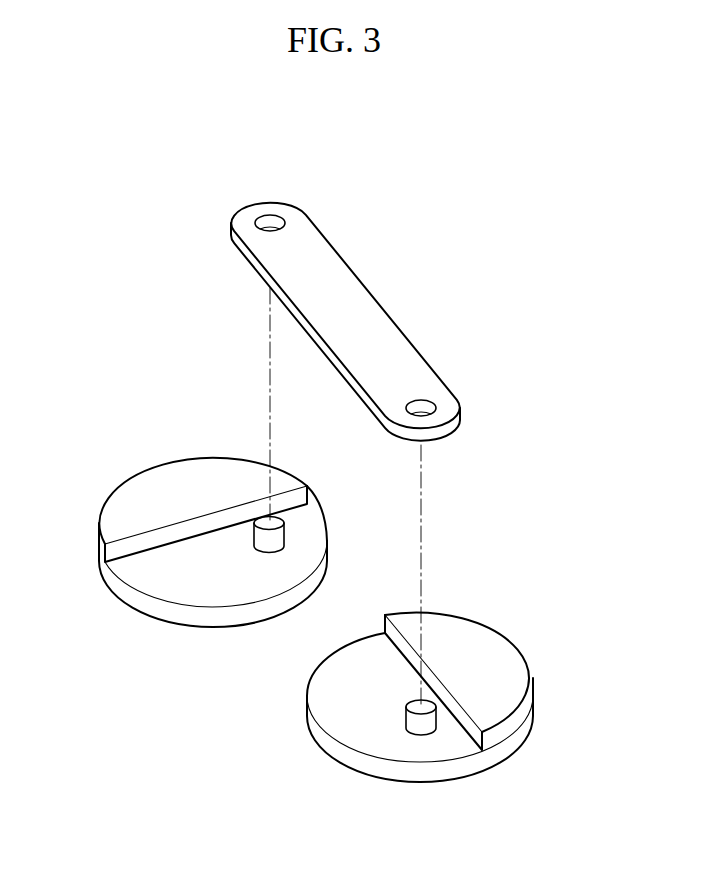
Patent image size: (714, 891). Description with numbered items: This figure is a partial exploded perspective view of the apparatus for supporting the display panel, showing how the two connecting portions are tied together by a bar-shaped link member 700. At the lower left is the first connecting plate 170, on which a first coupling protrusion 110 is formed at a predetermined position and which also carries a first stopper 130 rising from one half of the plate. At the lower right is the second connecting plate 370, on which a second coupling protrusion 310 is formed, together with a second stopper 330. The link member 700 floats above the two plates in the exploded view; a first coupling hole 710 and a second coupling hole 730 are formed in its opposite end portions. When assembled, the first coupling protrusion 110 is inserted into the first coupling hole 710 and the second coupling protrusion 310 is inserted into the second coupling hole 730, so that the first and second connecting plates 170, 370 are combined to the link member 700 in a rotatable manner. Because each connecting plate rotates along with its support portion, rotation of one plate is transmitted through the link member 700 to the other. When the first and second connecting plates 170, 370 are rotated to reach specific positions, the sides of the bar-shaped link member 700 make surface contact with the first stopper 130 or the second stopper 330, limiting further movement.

The link member 700 is at (371, 305).
The first coupling hole 710 is at (271, 219).
The second coupling hole 730 is at (427, 407).
The first stopper 130 is at (137, 483).
The first connecting plate 170 is at (152, 583).
The first coupling protrusion 110 is at (263, 545).
The second stopper 330 is at (503, 648).
The second connecting plate 370 is at (367, 733).
The second coupling protrusion 310 is at (425, 728).